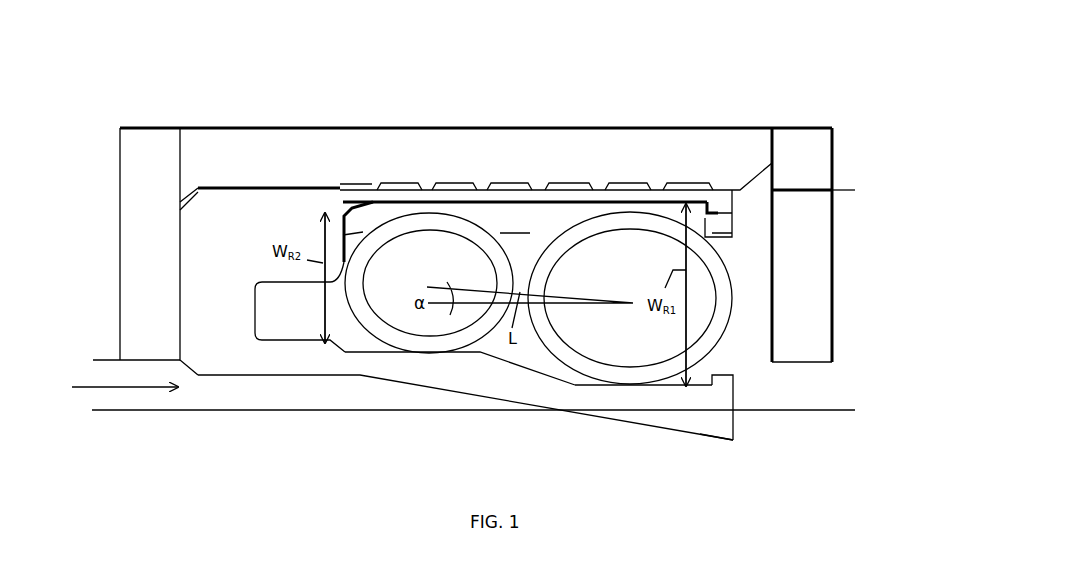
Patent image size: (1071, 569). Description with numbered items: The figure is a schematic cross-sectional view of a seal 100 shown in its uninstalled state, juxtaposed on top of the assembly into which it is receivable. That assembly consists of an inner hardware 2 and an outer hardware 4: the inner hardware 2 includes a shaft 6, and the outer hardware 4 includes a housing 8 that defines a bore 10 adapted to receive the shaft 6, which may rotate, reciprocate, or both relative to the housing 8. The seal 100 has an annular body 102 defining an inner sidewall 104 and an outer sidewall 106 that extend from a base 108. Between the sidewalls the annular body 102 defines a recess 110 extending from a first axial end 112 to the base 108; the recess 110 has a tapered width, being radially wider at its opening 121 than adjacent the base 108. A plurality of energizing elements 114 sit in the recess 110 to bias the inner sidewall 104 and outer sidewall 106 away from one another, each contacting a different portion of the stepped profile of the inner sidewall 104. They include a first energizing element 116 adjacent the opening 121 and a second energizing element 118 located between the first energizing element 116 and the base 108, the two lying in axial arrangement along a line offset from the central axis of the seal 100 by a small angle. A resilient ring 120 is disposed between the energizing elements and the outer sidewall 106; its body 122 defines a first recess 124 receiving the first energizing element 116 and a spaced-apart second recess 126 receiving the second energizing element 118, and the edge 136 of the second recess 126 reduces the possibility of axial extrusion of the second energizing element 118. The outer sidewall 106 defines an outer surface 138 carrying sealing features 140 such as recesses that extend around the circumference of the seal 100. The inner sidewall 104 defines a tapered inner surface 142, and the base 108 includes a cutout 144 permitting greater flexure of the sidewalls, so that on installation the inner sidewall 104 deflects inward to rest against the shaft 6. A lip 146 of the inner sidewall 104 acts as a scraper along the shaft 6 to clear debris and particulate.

The inner hardware 2 is at (337, 413).
The outer hardware 4 is at (457, 144).
The shaft 6 is at (140, 415).
The housing 8 is at (205, 146).
The bore 10 is at (103, 383).
The seal 100 is at (727, 224).
The annular body 102 is at (288, 218).
The inner sidewall 104 is at (637, 420).
The outer sidewall 106 is at (560, 203).
The base 108 is at (220, 315).
The recess 110 is at (650, 330).
The first axial end 112 is at (740, 378).
The energizing elements 114 is at (552, 348).
The first energizing element 116 is at (658, 233).
The second energizing element 118 is at (408, 343).
The resilient ring 120 is at (520, 213).
The opening 121 is at (750, 298).
The body 122 is at (375, 215).
The first recess 124 is at (628, 215).
The second recess 126 is at (430, 216).
The edge 136 is at (498, 233).
The outer surface 138 is at (558, 182).
The sealing features 140 is at (660, 190).
The tapered inner surface 142 is at (707, 444).
The cutout 144 is at (285, 318).
The lip 146 is at (733, 441).